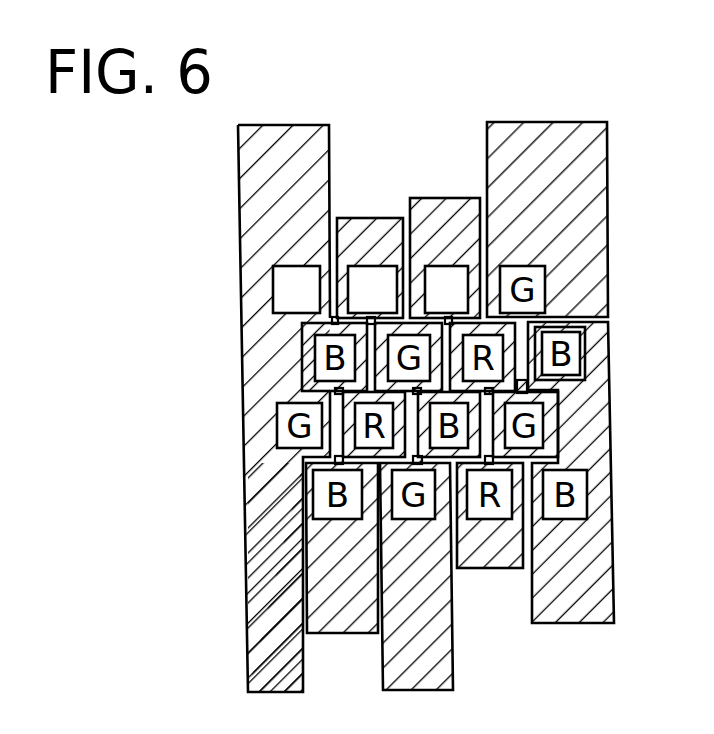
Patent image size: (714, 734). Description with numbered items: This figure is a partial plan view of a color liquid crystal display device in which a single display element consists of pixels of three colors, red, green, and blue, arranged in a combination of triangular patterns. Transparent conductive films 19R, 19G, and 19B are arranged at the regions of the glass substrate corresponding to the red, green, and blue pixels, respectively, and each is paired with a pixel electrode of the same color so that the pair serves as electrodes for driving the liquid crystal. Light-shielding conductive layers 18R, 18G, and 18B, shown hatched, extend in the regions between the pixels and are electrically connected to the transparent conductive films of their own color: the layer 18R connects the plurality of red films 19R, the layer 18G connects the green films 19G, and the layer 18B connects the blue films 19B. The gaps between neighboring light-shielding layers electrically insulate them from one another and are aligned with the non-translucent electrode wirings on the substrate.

The light-shielding conductive layer 18G is at (250, 188).
The light-shielding conductive layer 18R is at (390, 224).
The light-shielding conductive layer 18B is at (475, 198).
The transparent conductive film 19G is at (275, 305).
The transparent conductive film 19R is at (360, 267).
The transparent conductive film 19B is at (438, 264).